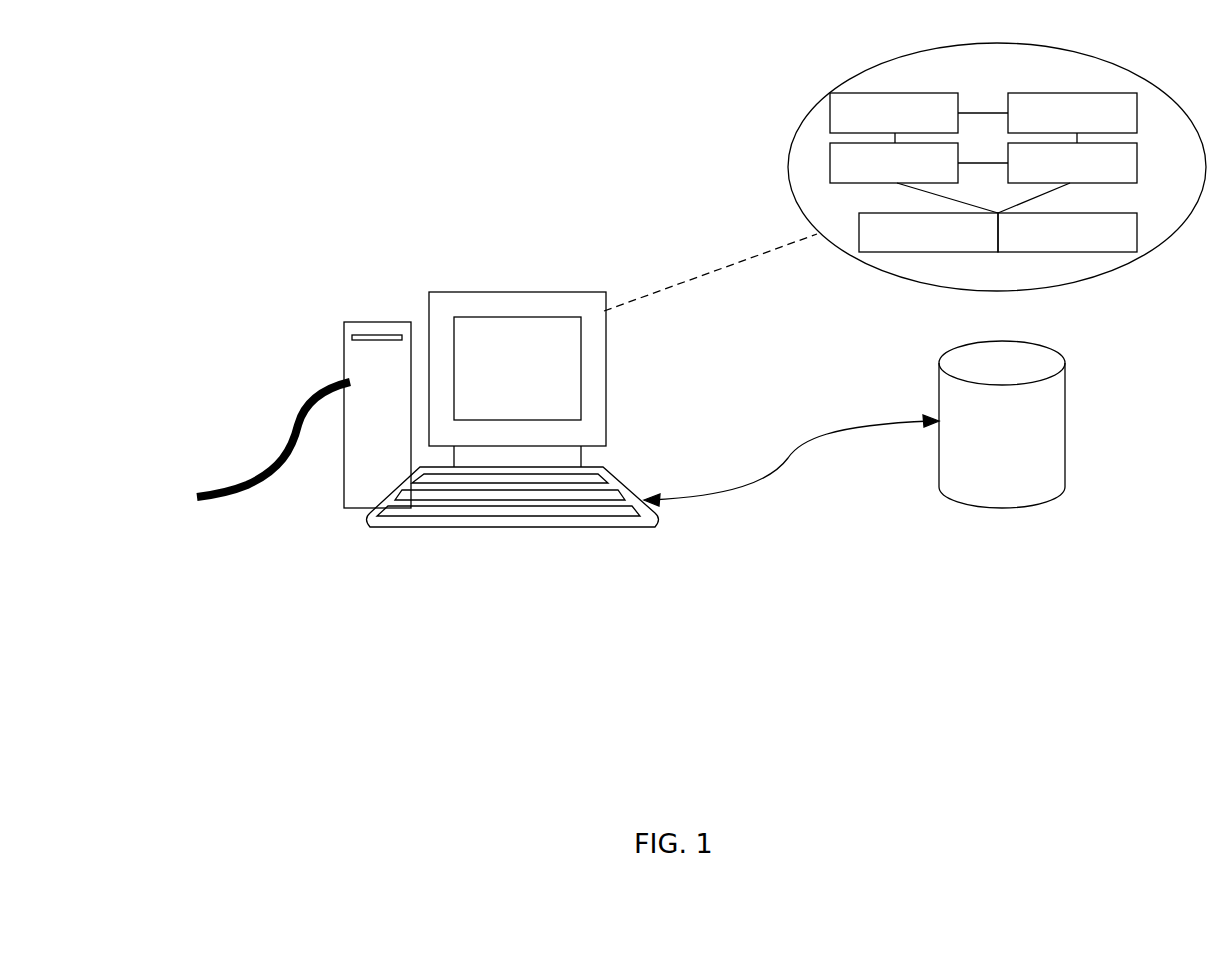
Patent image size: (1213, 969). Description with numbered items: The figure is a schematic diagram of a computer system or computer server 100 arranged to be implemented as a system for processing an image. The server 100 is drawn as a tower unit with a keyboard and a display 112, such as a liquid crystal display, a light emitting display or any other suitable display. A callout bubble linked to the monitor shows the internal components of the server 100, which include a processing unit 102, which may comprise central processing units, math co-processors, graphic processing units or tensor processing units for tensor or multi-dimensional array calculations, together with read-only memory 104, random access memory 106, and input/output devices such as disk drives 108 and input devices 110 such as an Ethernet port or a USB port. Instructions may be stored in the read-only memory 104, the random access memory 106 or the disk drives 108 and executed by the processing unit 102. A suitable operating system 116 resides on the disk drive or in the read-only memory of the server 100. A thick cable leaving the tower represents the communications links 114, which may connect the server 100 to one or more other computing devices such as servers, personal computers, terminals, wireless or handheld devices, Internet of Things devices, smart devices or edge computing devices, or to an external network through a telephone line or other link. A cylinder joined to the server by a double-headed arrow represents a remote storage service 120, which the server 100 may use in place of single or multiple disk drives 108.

The computer server 100 is at (501, 427).
The processing unit 102 is at (894, 113).
The read-only memory (ROM) 104 is at (1072, 113).
The random access memory (RAM) 106 is at (894, 163).
The disk drives 108 is at (1072, 163).
The input devices 110 is at (928, 232).
The display 112 is at (523, 281).
The communications links 114 is at (228, 501).
The operating system 116 is at (1067, 232).
The remote storage service 120 is at (1002, 424).